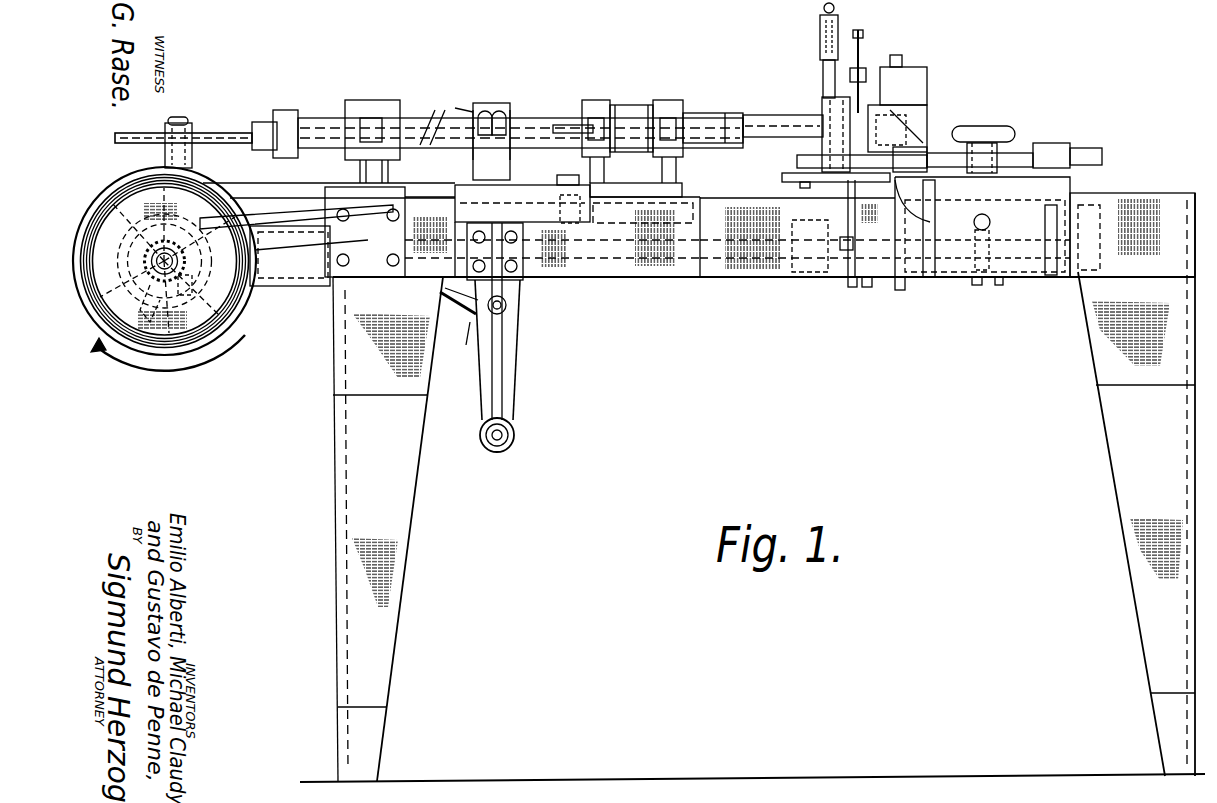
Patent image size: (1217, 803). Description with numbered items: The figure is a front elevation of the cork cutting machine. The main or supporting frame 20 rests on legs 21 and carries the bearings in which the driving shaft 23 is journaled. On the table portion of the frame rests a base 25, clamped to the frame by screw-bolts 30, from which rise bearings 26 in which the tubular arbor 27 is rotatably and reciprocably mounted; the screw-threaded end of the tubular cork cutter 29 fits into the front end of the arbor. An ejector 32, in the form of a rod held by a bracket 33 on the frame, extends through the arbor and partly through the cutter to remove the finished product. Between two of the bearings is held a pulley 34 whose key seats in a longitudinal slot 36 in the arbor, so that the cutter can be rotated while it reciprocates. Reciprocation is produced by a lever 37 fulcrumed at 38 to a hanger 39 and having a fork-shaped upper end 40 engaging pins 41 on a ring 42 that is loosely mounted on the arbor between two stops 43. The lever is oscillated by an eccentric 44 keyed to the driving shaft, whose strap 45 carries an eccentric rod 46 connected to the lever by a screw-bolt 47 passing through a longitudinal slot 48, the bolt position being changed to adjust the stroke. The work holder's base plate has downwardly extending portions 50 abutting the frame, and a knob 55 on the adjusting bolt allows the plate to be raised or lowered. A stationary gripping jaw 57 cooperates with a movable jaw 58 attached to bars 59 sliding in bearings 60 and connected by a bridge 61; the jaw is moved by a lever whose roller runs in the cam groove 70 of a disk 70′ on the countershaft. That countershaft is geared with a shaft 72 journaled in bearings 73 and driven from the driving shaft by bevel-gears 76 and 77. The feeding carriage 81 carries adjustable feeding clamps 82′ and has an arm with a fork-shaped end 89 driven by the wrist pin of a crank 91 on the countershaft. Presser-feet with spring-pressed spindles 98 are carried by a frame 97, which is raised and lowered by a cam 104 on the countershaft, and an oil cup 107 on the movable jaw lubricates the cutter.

The main frame 20 is at (680, 279).
The legs 21 is at (410, 480).
The driving shaft 23 is at (145, 262).
The base 25 is at (535, 186).
The bearings 26 is at (372, 110).
The tubular arbor 27 is at (548, 120).
The tubular cork cutter 29 is at (775, 115).
The screw-bolts 30 is at (568, 189).
The ejector 32 is at (238, 132).
The bracket 33 is at (188, 128).
The pulley 34 is at (633, 103).
The longitudinal slot 36 is at (702, 117).
The lever 37 is at (515, 330).
The fulcrum 38 is at (510, 434).
The hanger 39 is at (522, 345).
The fork-shaped upper end 40 is at (485, 112).
The pins 41 is at (511, 115).
The ring 42 is at (499, 112).
The stops 43 is at (457, 126).
The eccentric 44 is at (140, 178).
The strap 45 is at (233, 185).
The eccentric rod 46 is at (460, 308).
The screw-bolt 47 is at (508, 306).
The longitudinal slot 48 is at (470, 348).
The downwardly extending portions 50 is at (1060, 200).
The knob 55 is at (980, 127).
The stationary gripping jaw 57 is at (928, 112).
The movable jaw 58 is at (800, 160).
The bars 59 is at (1088, 148).
The bearings 60 is at (1050, 143).
The bridge 61 is at (990, 135).
The cam groove 70 is at (980, 286).
The disk 70′ is at (1002, 286).
The shaft 72 is at (735, 278).
The bearings 73 is at (800, 278).
The bevel-gear 76 is at (192, 285).
The bevel-gear 77 is at (140, 276).
The carriage 81 is at (784, 178).
The adjustable feeding clamps 82′ is at (822, 140).
The fork-shaped end 89 is at (850, 280).
The crank 91 is at (867, 290).
The frame 97 is at (887, 65).
The spindle 98 is at (861, 60).
The cam 104 is at (900, 292).
The oil cup 107 is at (818, 30).